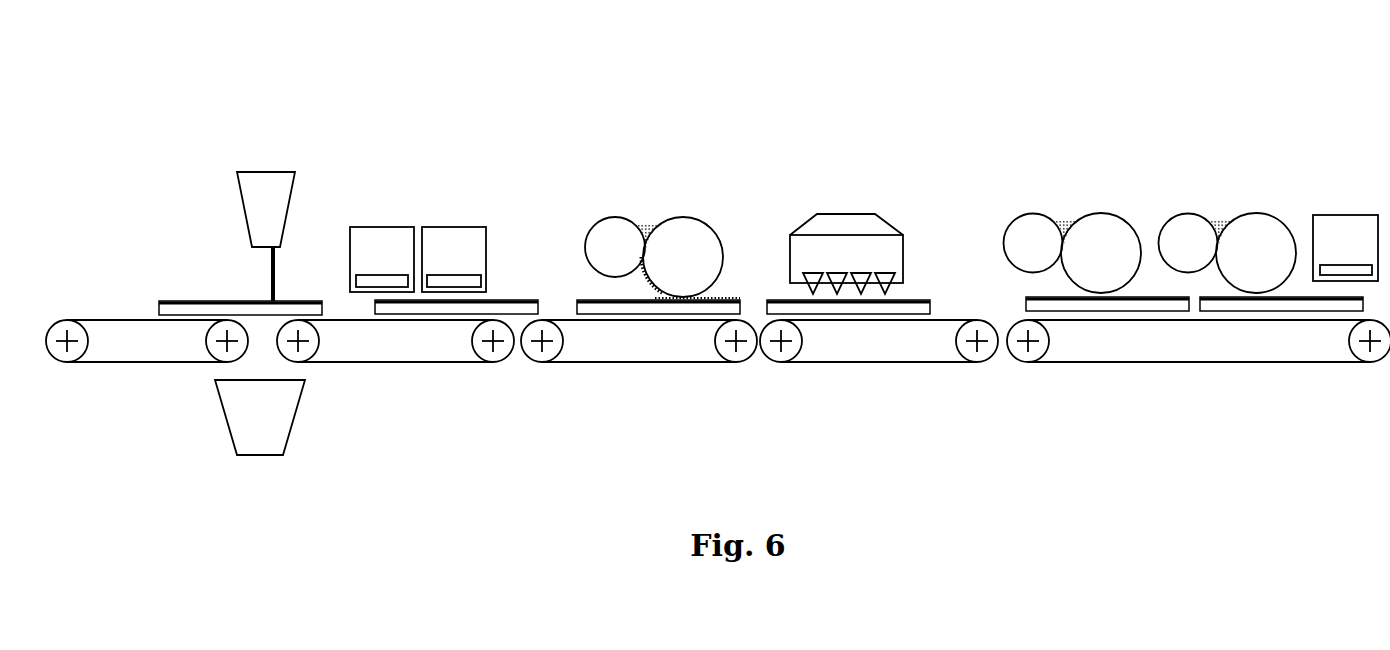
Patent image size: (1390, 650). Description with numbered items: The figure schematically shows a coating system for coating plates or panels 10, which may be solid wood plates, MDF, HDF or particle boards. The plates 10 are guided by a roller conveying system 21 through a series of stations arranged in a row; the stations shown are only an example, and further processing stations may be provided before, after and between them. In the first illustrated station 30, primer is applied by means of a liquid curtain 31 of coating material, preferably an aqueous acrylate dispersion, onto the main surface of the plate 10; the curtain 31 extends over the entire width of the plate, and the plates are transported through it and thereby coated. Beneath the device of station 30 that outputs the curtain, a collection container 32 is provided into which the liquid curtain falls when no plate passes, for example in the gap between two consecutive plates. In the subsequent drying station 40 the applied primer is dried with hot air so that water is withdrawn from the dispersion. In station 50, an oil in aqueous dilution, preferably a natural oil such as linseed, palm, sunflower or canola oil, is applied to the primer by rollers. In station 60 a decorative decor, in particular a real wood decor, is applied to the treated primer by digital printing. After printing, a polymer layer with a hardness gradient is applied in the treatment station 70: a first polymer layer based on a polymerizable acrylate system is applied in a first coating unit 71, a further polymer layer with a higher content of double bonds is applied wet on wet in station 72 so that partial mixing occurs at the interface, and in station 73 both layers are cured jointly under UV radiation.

The plate 10 is at (205, 292).
The roller conveying system 21 is at (119, 348).
The first station 30 is at (267, 192).
The liquid curtain 31 is at (275, 268).
The collection container 32 is at (268, 415).
The drying station 40 is at (392, 233).
The station 50 is at (680, 202).
The station 60 is at (851, 196).
The treatment station 70 is at (1297, 126).
The first coating unit 71 is at (1086, 194).
The station 72 is at (1233, 191).
The station 73 is at (1338, 233).